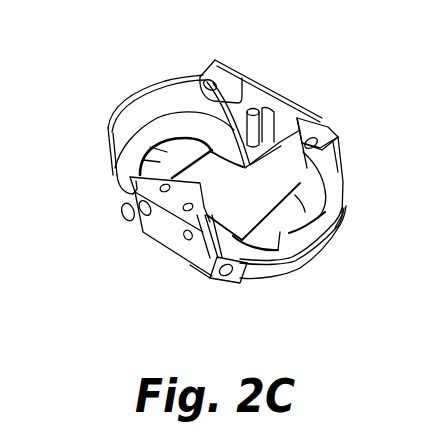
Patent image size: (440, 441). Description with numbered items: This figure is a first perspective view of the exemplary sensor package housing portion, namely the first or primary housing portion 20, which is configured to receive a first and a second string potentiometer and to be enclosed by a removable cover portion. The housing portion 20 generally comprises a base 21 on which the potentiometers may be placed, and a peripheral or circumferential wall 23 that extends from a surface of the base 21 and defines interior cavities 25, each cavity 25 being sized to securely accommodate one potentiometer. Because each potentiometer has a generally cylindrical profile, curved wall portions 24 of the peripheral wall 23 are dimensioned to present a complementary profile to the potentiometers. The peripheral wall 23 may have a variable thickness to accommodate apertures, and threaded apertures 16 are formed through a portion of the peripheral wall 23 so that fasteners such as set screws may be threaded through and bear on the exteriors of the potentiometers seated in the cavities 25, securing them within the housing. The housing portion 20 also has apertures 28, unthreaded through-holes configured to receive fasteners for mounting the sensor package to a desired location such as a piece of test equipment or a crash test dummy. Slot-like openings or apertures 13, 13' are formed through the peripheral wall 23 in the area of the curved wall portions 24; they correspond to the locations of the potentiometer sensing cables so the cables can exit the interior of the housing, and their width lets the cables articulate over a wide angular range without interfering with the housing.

The slot-like aperture 13 is at (263, 269).
The slot-like aperture 13' is at (66, 133).
The aperture 16 is at (192, 239).
The first housing portion 20 is at (266, 63).
The base 21 is at (117, 177).
The peripheral wall 23 is at (313, 122).
The curved wall portion 24 is at (143, 103).
The interior cavity 25 is at (150, 137).
The aperture 28 is at (122, 212).